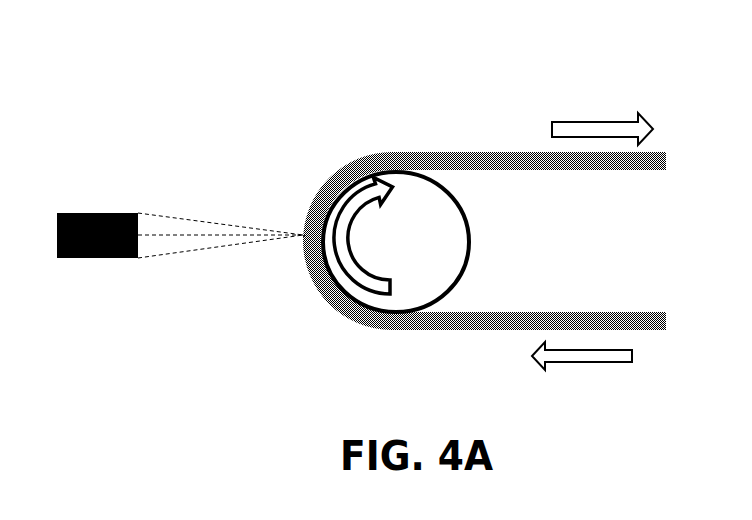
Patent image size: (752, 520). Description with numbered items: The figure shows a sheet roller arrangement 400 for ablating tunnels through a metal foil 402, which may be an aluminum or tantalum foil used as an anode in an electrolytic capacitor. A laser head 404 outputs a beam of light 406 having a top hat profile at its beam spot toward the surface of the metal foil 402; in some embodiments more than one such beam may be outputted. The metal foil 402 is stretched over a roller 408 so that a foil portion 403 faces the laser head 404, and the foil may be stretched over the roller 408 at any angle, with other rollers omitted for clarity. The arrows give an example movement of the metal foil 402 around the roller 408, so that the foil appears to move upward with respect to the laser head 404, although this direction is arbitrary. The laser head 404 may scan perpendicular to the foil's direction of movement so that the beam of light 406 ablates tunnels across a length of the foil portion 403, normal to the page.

The sheet roller arrangement 400 is at (82, 59).
The metal foil 402 is at (401, 152).
The foil portion 403 is at (302, 243).
The laser head 404 is at (83, 212).
The beam of light 406 is at (197, 220).
The roller 408 is at (470, 235).